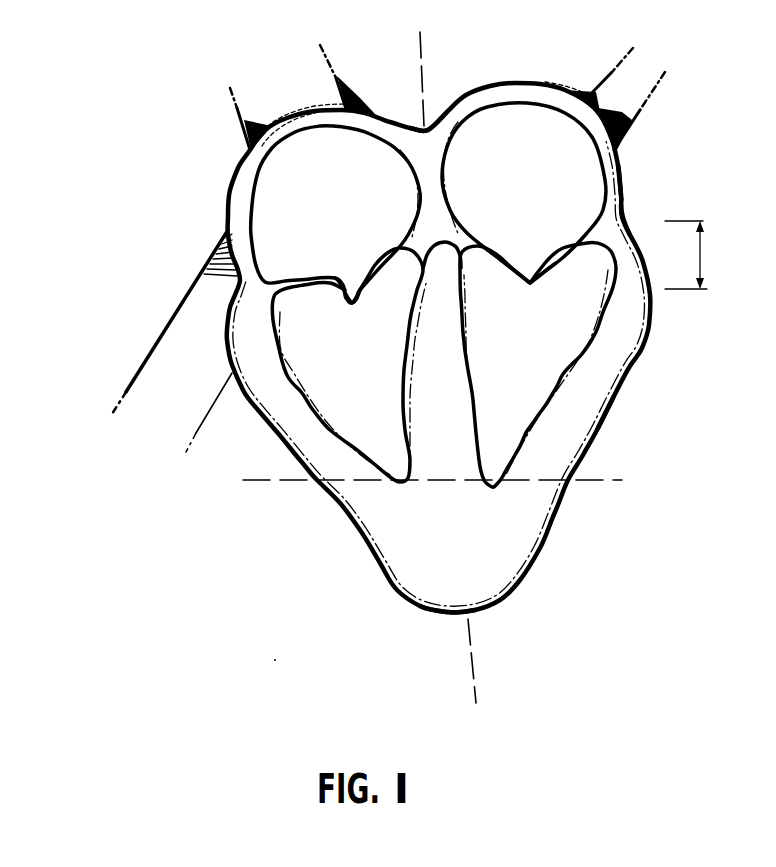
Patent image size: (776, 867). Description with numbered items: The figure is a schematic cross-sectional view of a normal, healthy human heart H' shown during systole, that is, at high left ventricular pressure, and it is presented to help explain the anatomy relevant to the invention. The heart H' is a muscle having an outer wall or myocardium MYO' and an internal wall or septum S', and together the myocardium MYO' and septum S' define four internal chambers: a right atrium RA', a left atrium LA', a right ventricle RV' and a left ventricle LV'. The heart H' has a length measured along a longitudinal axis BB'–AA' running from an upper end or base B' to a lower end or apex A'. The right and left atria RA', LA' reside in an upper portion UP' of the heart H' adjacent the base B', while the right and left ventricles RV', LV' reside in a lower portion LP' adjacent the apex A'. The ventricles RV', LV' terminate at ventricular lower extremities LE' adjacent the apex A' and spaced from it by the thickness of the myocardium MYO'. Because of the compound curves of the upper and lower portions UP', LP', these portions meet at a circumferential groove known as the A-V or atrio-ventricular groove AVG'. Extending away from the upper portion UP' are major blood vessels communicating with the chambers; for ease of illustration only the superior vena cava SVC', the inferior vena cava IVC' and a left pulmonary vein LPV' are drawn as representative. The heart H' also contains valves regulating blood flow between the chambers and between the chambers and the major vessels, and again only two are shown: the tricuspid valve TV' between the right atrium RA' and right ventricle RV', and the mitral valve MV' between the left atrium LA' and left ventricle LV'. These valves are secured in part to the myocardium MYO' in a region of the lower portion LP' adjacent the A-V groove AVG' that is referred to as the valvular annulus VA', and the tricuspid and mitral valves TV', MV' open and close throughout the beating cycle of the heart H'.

The heart H' is at (436, 347).
The myocardium MYO' is at (422, 373).
The right atrium RA' is at (336, 215).
The left atrium LA' is at (524, 193).
The right ventricle RV' is at (347, 365).
The left ventricle LV' is at (538, 365).
The septum S' is at (421, 356).
The tricuspid valve TV' is at (315, 273).
The mitral valve MV' is at (532, 244).
The superior vena cava SVC' is at (268, 97).
The left pulmonary vein LPV' is at (601, 124).
The inferior vena cava IVC' is at (174, 341).
The upper portion UP' is at (656, 177).
The A-V groove AVG' is at (667, 210).
The valvular annulus VA' is at (706, 255).
The base B' is at (438, 91).
The longitudinal axis end point BB' is at (420, 66).
The lower portion LP' is at (637, 408).
The ventricular lower extremities LE' is at (446, 496).
The apex A' is at (468, 629).
The longitudinal axis end point AA' is at (483, 675).